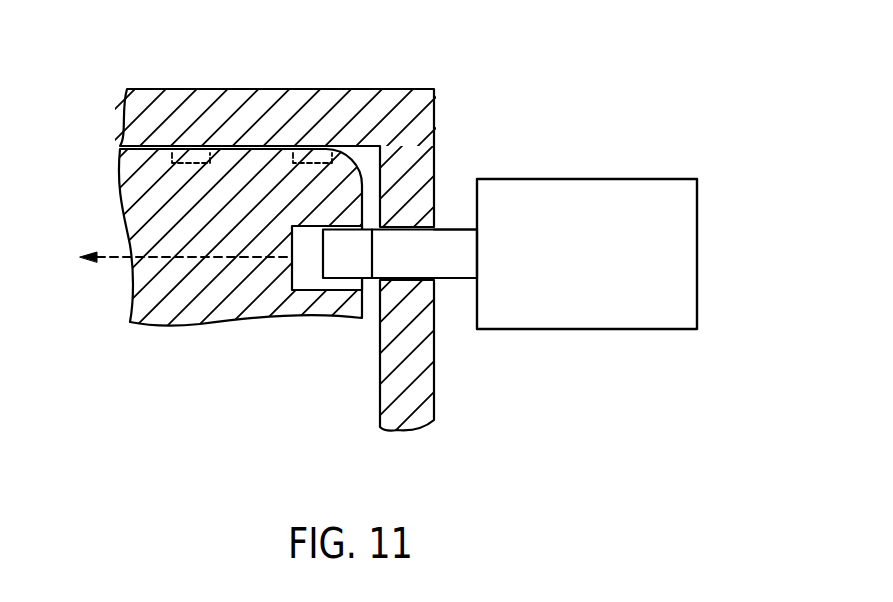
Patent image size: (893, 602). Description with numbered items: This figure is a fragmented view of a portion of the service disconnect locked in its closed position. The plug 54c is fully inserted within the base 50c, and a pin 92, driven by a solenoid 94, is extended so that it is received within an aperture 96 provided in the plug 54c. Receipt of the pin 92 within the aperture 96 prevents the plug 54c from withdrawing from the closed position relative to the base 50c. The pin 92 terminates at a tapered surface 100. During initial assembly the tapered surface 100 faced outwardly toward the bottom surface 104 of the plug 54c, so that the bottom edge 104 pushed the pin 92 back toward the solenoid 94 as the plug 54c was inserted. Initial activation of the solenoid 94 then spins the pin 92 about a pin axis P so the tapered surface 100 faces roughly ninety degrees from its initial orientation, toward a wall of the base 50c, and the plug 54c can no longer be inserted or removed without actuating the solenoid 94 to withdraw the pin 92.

The base 50c is at (434, 92).
The plug 54c is at (150, 147).
The bottom surface 104 is at (252, 148).
The tapered surface 100 is at (293, 291).
The aperture 96 is at (321, 291).
The pin 92 is at (442, 229).
The solenoid 94 is at (698, 220).
The pin axis P is at (115, 257).